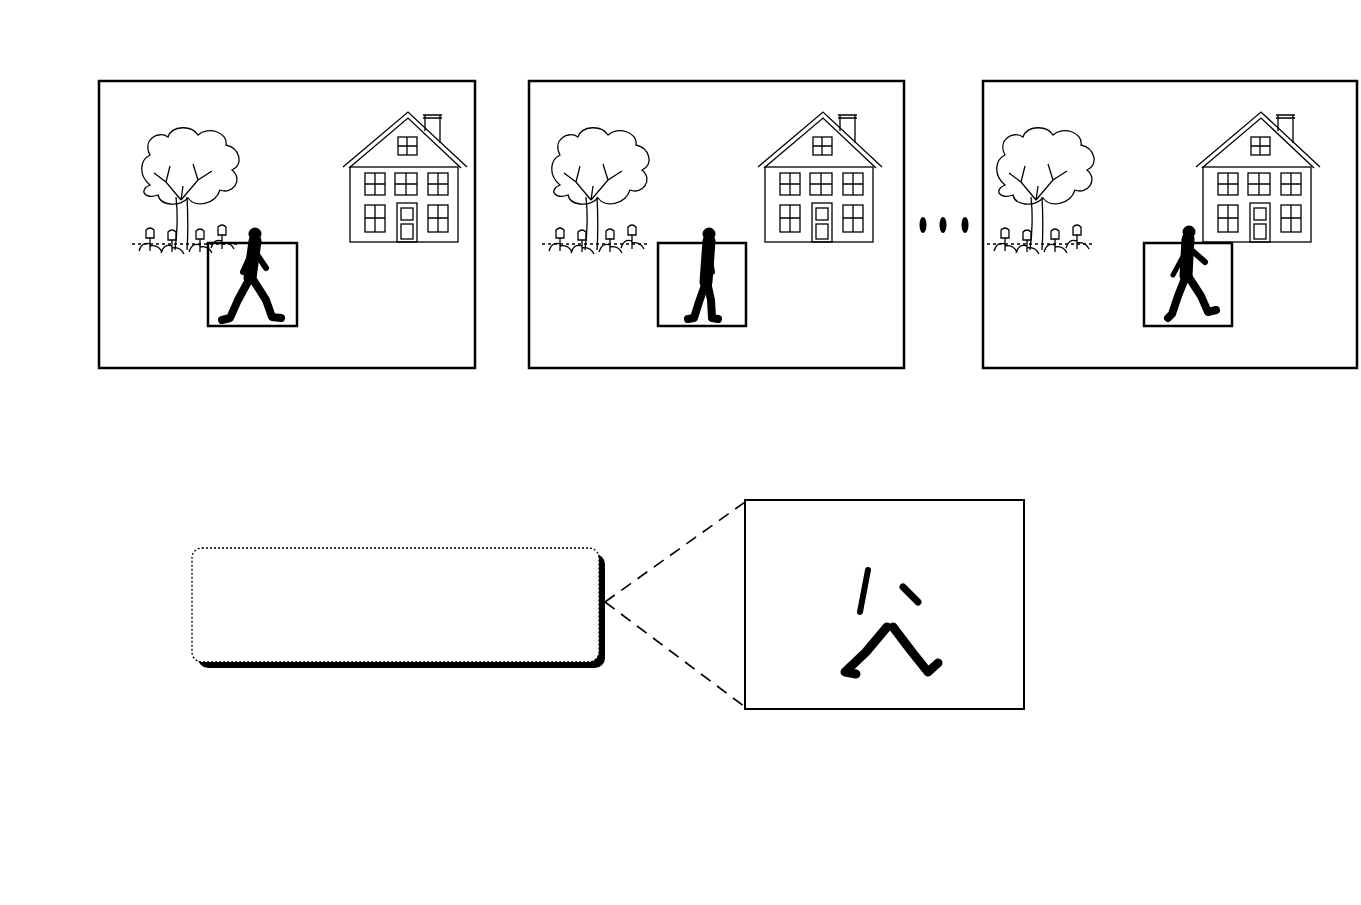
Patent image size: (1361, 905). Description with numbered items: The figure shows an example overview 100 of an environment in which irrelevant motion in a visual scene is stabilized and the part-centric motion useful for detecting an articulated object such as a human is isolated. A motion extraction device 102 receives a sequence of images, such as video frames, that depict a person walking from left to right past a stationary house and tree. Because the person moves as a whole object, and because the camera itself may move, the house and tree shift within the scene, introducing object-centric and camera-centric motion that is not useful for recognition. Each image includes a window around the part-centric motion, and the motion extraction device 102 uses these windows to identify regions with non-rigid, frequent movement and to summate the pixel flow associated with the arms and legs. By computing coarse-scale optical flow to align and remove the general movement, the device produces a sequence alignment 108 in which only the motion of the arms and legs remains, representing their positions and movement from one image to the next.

The example overview 100 is at (145, 38).
The motion extraction device 102 is at (380, 628).
The sequence alignment 108 is at (1024, 547).